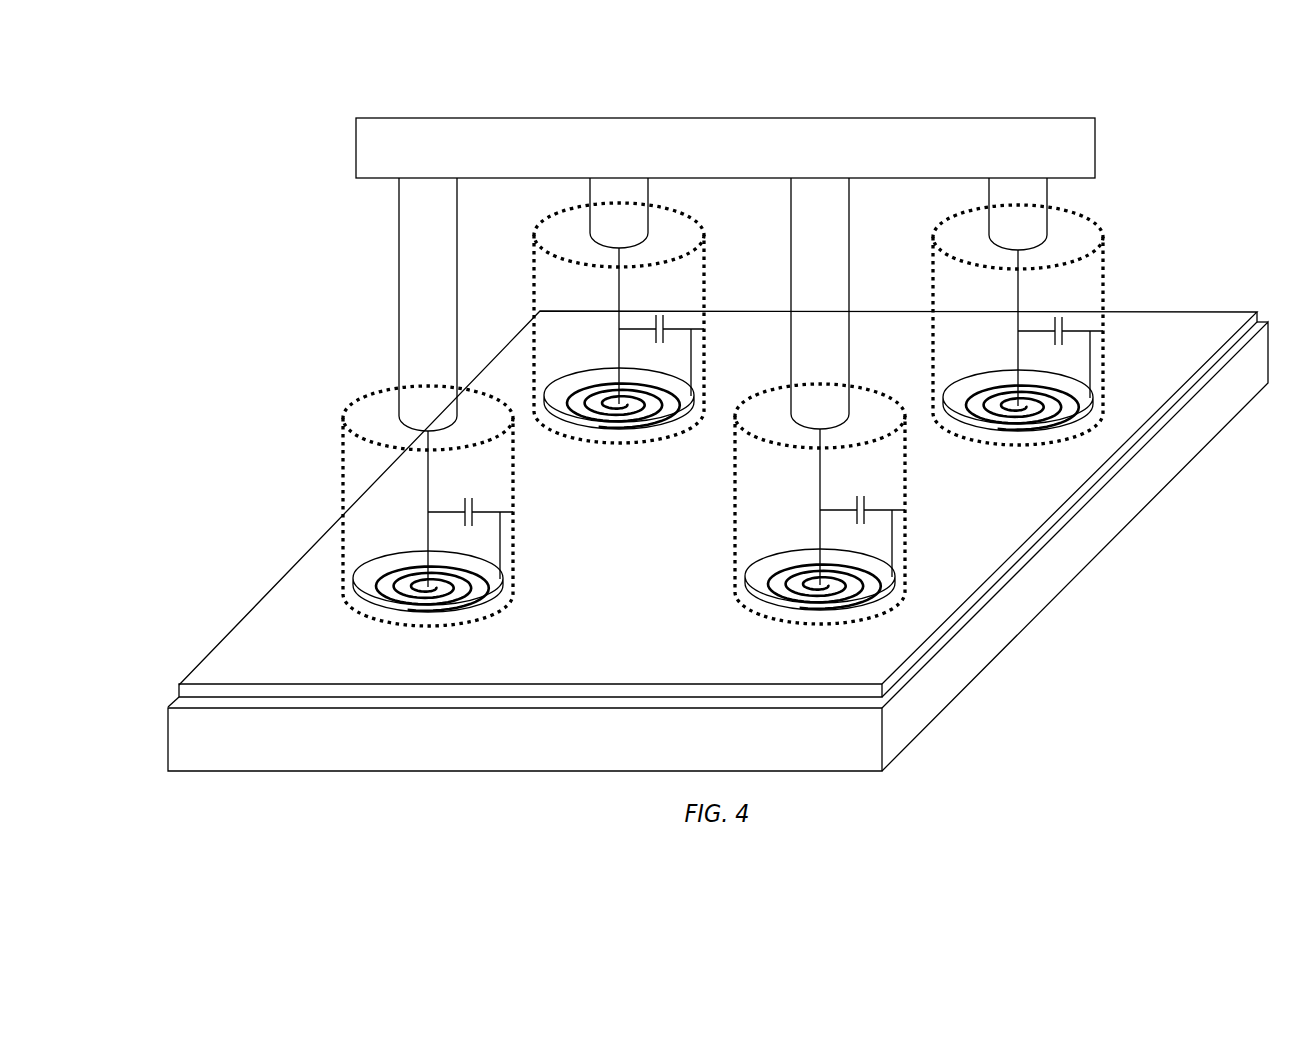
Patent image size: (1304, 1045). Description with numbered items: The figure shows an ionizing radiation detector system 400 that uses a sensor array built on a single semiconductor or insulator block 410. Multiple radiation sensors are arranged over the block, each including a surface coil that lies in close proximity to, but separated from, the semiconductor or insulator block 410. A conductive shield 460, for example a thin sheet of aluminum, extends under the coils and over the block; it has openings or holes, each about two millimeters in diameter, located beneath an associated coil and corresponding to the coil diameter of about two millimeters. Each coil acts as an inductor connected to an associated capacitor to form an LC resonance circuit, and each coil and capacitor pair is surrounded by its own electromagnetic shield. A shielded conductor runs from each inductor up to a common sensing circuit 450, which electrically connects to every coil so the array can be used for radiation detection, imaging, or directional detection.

The ionizing radiation detector system 400 is at (547, 76).
The semiconductor or insulator block 410 is at (698, 741).
The sensing circuit 450 is at (810, 158).
The conductive shield 460 is at (645, 679).